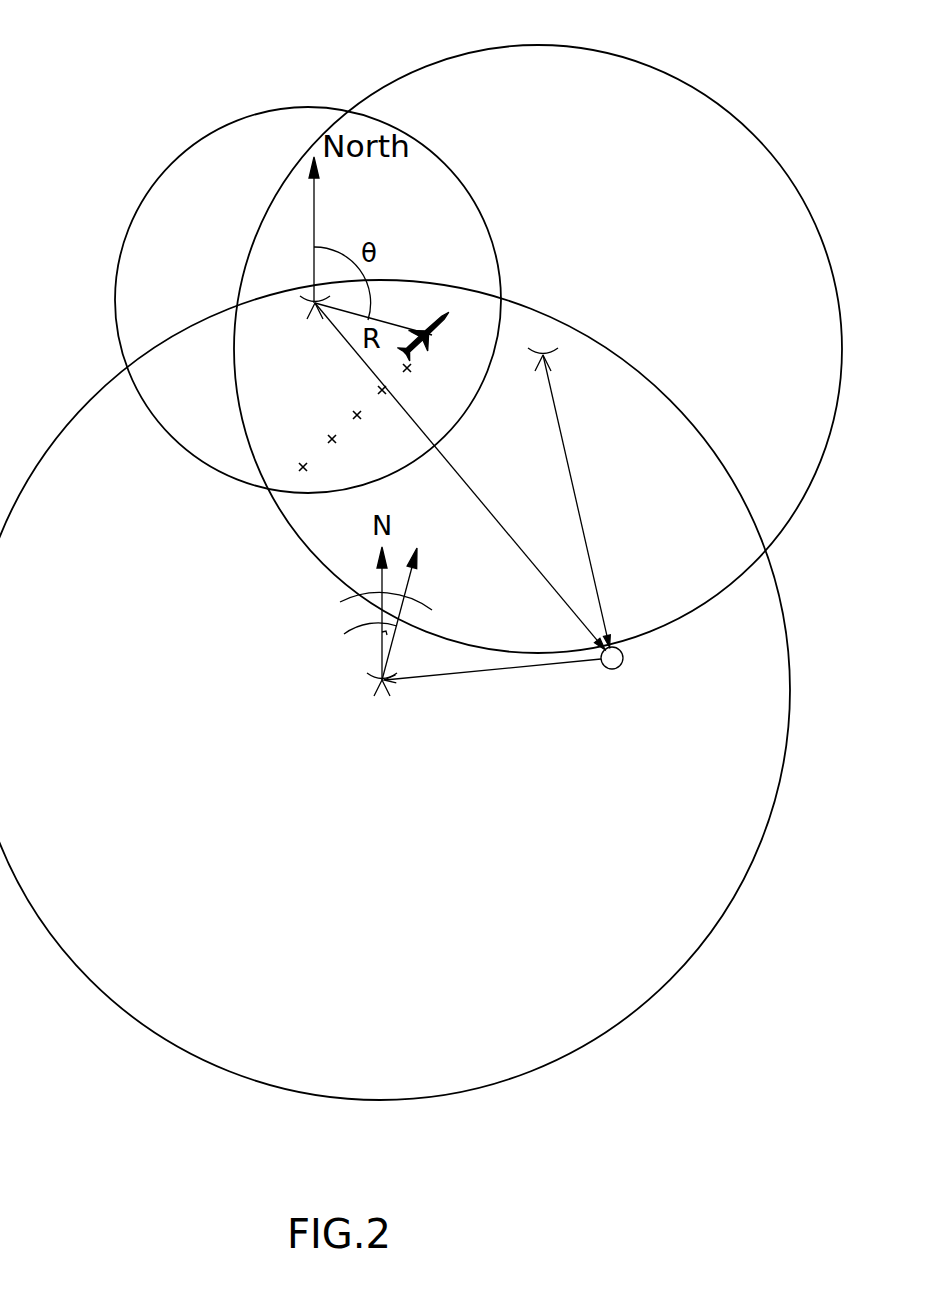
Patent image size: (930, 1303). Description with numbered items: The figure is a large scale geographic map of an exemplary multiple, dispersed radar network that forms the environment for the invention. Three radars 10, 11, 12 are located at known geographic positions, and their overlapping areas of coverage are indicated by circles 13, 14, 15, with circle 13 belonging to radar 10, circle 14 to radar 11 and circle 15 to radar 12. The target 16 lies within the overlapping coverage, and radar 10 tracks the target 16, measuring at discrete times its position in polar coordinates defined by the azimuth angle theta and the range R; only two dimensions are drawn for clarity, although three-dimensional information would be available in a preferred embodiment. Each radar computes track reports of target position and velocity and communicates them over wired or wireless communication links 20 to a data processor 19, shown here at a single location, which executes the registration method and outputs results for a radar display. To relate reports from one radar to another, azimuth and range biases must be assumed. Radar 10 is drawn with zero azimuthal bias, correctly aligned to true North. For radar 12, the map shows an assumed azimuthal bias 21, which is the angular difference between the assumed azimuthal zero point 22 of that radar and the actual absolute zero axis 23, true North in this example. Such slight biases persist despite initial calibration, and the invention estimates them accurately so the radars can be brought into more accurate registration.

The radar 10 is at (306, 298).
The radar 11 is at (548, 345).
The radar 12 is at (372, 680).
The circle 13 is at (122, 237).
The circle 14 is at (743, 127).
The circle 15 is at (148, 1027).
The target 16 is at (448, 315).
The data processor 19 is at (622, 665).
The communication link 20 is at (472, 492).
The azimuthal bias 21 is at (356, 646).
The assumed azimuthal zero point 22 is at (429, 614).
The absolute zero axis 23 is at (367, 610).